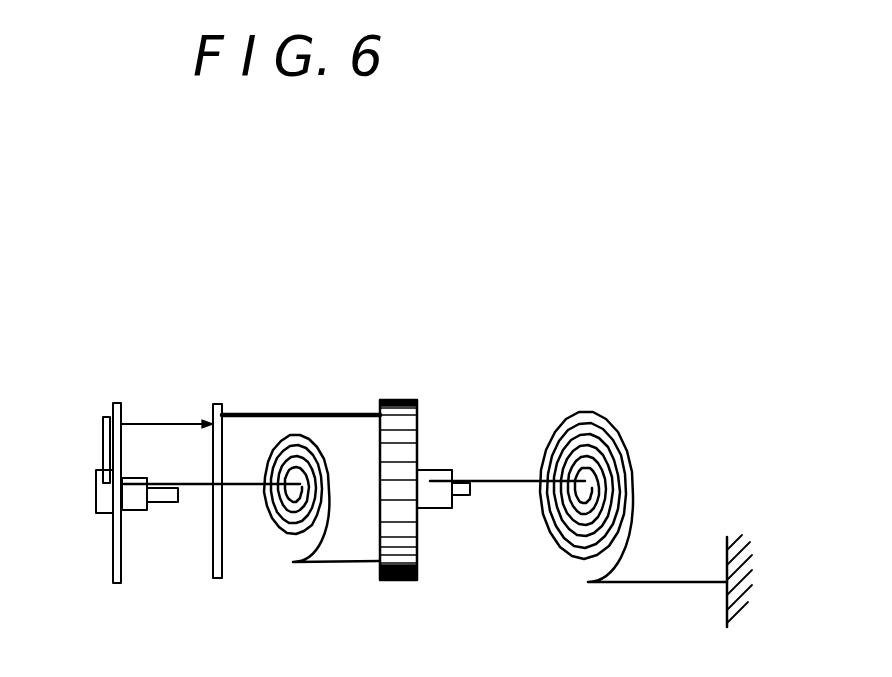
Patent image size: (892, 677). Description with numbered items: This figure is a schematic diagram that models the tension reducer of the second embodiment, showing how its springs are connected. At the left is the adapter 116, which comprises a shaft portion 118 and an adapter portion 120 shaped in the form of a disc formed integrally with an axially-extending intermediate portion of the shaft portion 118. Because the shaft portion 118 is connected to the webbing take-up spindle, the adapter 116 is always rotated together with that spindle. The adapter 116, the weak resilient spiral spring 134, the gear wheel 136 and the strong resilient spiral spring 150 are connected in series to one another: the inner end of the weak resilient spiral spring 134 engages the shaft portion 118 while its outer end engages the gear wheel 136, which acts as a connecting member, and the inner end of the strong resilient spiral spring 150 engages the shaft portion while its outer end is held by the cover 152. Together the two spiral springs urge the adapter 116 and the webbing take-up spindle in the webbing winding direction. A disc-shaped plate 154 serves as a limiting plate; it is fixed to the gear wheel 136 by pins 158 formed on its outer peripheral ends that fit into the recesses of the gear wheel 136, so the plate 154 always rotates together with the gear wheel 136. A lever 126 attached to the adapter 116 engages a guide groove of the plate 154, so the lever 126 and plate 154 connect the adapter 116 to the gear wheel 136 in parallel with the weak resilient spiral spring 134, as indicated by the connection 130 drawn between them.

The adapter 116 is at (104, 528).
The shaft portion 118 is at (100, 490).
The adapter portion 120 is at (118, 583).
The lever 126 is at (104, 430).
The connection / arrow link 130 is at (120, 422).
The weak resilient spiral spring 134 is at (283, 550).
The gear wheel 136 is at (405, 400).
The strong resilient spiral spring 150 is at (586, 407).
The cover 152 is at (727, 612).
The plate 154 is at (220, 580).
The pins 158 is at (298, 413).